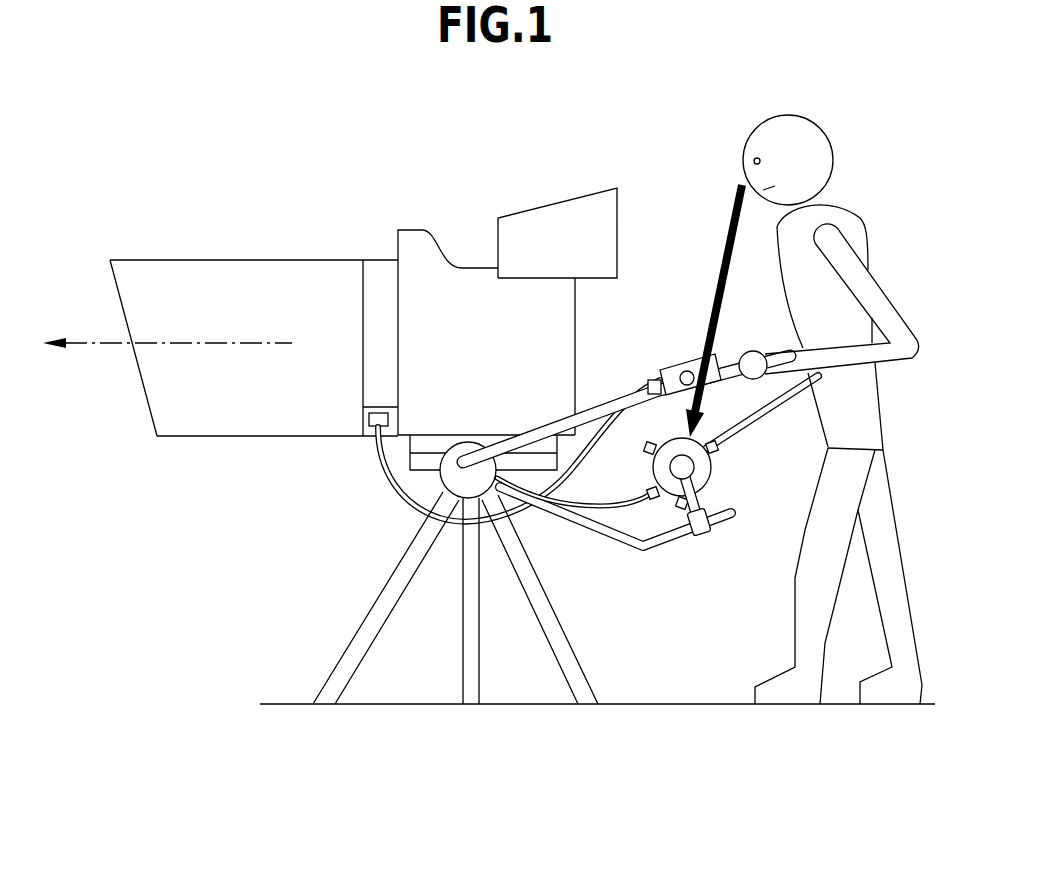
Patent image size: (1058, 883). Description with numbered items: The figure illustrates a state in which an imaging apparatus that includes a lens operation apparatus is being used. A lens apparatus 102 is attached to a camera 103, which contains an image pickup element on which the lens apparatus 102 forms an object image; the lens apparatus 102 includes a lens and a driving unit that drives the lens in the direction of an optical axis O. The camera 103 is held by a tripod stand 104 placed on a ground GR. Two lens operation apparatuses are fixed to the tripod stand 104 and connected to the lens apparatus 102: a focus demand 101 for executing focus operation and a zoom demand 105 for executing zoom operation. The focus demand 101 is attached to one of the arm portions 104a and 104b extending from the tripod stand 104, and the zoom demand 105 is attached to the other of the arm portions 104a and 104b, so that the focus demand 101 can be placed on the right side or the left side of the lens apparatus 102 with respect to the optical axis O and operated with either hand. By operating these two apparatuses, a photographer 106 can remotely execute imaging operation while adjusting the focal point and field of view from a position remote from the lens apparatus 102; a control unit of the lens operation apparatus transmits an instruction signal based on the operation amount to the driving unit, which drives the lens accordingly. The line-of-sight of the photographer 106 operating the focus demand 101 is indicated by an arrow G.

The focus demand 101 is at (722, 483).
The lens apparatus 102 is at (205, 250).
The camera 103 is at (438, 218).
The tripod stand 104 is at (360, 580).
The arm portion 104a is at (727, 392).
The arm portion 104b is at (657, 535).
The zoom demand 105 is at (690, 345).
The photographer 106 is at (860, 185).
The arrow indicating line-of-sight G is at (714, 311).
The ground GR is at (681, 706).
The optical axis O is at (167, 332).